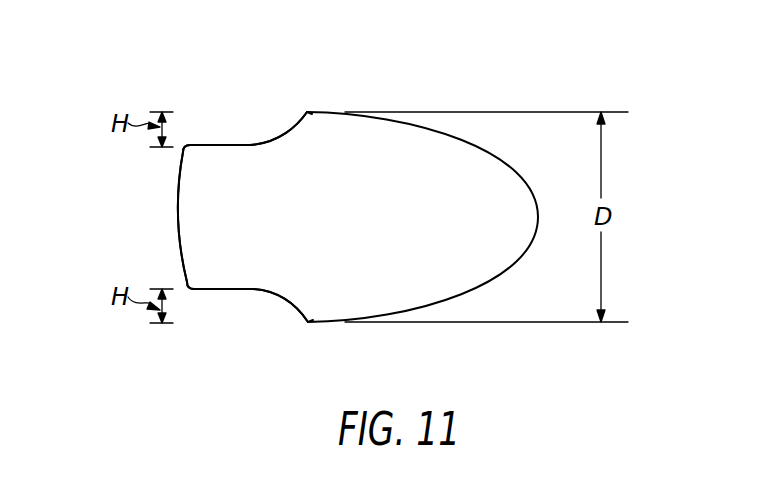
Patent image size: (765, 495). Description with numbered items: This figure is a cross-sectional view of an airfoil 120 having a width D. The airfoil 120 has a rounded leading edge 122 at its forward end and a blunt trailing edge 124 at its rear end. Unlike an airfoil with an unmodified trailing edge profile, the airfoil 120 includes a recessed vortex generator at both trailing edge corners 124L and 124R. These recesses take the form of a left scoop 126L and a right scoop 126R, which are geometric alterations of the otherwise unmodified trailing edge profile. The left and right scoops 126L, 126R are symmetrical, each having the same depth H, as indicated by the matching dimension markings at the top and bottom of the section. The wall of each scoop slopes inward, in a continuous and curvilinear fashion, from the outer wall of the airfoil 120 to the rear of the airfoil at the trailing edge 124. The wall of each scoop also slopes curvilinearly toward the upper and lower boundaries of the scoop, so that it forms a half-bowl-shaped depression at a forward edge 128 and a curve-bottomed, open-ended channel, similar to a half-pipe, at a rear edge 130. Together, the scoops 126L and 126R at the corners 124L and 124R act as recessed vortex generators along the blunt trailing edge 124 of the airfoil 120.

The airfoil 120 is at (435, 128).
The rounded leading edge 122 is at (541, 216).
The blunt trailing edge 124 is at (153, 220).
The left trailing edge corner 124L is at (178, 75).
The right trailing edge corner 124R is at (200, 335).
The left scoop 126L is at (253, 137).
The right scoop 126R is at (255, 302).
The forward edge of scoop 128 is at (312, 118).
The rear edge of scoop 130 is at (193, 152).